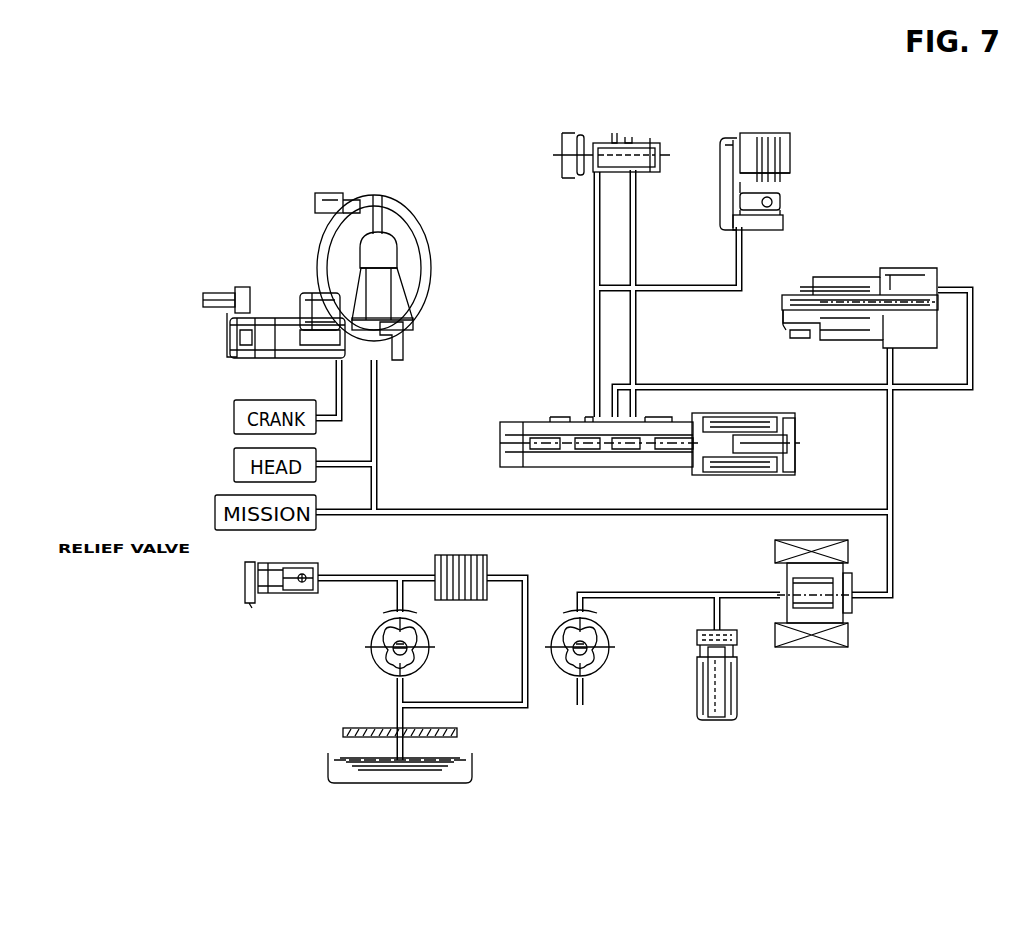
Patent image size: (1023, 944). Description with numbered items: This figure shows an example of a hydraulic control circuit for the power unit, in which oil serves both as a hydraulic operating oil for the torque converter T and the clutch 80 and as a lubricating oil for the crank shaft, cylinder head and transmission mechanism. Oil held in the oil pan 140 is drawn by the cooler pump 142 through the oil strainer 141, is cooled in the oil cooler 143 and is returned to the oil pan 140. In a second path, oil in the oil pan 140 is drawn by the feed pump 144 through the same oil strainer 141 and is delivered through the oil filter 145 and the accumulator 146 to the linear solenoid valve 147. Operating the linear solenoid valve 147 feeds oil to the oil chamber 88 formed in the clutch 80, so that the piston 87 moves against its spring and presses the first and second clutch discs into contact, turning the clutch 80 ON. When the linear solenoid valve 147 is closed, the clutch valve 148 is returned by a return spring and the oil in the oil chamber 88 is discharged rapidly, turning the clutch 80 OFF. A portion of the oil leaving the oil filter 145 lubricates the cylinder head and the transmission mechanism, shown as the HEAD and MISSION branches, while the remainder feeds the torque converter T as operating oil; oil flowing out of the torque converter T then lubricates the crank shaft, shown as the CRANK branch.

The torque converter T is at (320, 251).
The clutch valve 148 is at (608, 126).
The clutch 80 is at (767, 154).
The piston 87 is at (750, 146).
The oil chamber 88 is at (735, 212).
The accumulator 146 is at (887, 278).
The linear solenoid valve 147 is at (602, 428).
The oil cooler 143 is at (551, 569).
The cooler pump 142 is at (251, 643).
The feed pump 144 is at (701, 663).
The oil strainer 141 is at (292, 743).
The oil pan 140 is at (403, 799).
The oil filter 145 is at (890, 617).